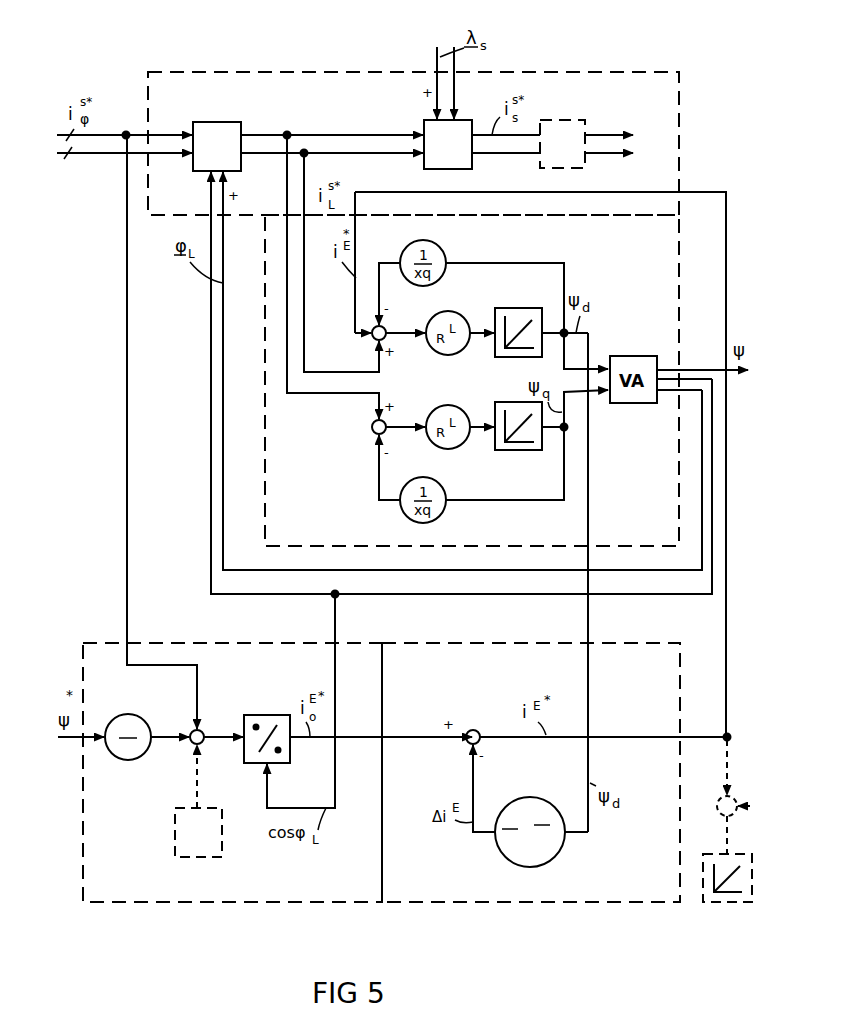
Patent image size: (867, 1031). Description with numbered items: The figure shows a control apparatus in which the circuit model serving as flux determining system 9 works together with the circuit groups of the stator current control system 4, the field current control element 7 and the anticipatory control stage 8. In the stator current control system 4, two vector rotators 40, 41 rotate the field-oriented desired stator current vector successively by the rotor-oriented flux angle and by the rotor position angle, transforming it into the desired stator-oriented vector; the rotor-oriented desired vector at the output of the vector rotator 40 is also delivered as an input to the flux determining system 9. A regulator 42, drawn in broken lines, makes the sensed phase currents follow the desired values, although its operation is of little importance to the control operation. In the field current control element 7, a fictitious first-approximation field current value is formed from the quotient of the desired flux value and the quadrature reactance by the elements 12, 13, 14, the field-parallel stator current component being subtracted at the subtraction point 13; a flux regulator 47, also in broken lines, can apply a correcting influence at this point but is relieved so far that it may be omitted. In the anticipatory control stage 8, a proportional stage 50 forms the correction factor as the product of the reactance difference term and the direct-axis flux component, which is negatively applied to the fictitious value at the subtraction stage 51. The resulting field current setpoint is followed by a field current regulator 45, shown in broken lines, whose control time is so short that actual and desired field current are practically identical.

The stator current control system 4 is at (296, 72).
The vector rotator 40 is at (219, 122).
The vector rotator 41 is at (424, 120).
The regulator 42 is at (562, 122).
The flux determining system 9 is at (681, 263).
The divider element 12 is at (115, 720).
The subtraction point 13 is at (192, 730).
The divider element 14 is at (266, 715).
The flux regulator 47 is at (175, 832).
The proportional stage 50 is at (530, 797).
The subtraction stage 51 is at (466, 745).
The field current control element 7 is at (207, 903).
The anticipatory control stage 8 is at (498, 903).
The field current regulator 45 is at (727, 902).